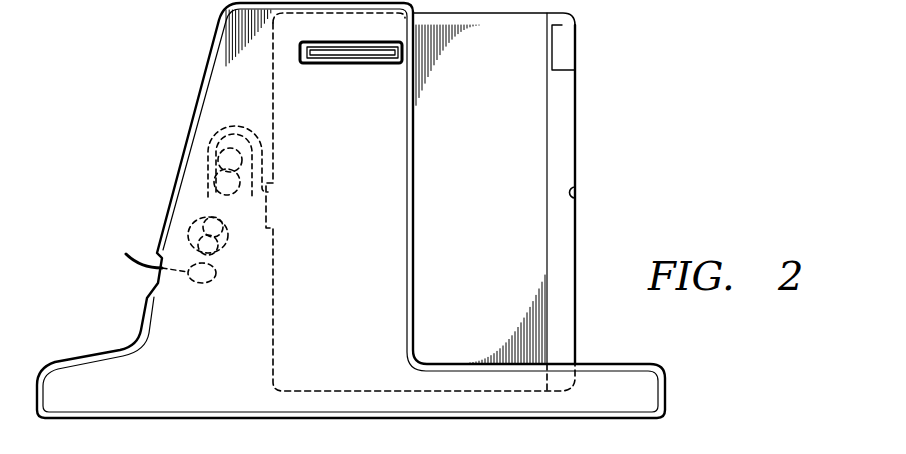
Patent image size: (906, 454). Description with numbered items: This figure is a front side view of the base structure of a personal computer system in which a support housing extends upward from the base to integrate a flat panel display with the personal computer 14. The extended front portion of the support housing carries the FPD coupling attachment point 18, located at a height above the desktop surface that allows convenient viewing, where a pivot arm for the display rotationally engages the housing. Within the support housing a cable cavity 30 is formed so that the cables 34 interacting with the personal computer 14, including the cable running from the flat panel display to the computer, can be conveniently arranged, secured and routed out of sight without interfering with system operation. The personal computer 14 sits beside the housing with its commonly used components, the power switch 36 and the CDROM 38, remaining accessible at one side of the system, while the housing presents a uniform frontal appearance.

The personal computer 14 is at (496, 220).
The FPD coupling attachment point 18 is at (339, 63).
The cable cavity 30 is at (218, 365).
The cables 34 is at (225, 127).
The power switch 36 is at (579, 195).
The CDROM 38 is at (572, 45).